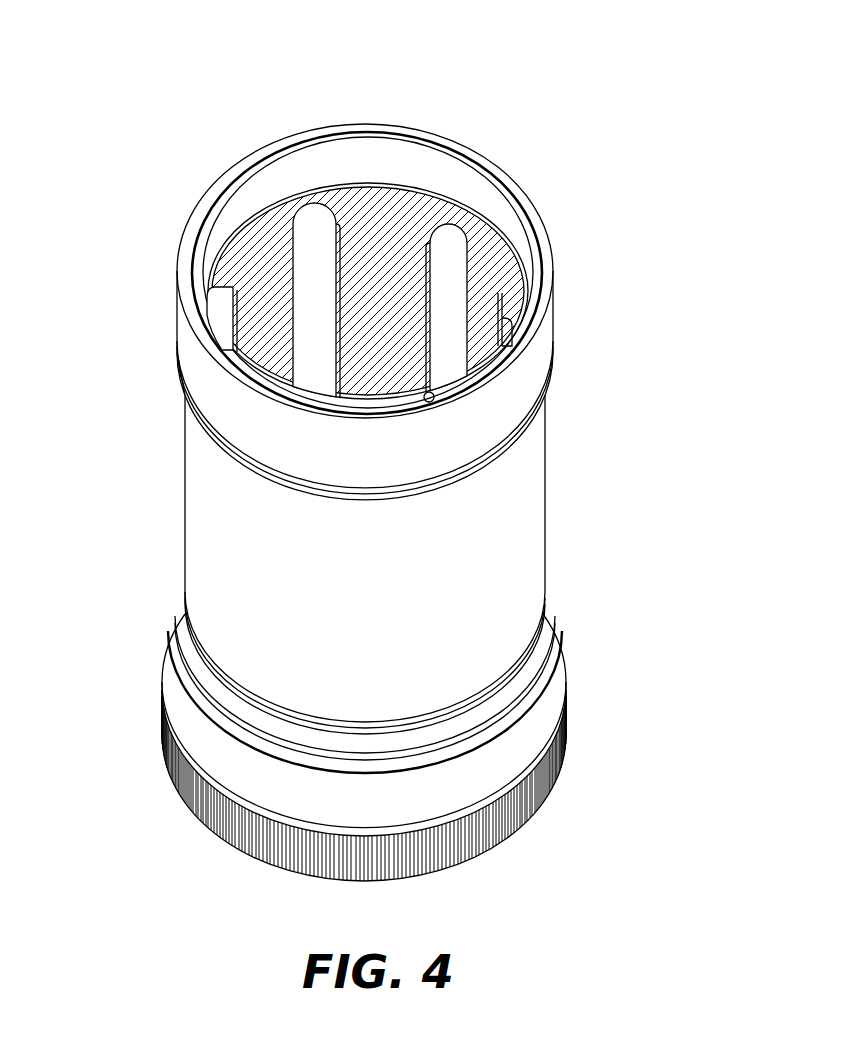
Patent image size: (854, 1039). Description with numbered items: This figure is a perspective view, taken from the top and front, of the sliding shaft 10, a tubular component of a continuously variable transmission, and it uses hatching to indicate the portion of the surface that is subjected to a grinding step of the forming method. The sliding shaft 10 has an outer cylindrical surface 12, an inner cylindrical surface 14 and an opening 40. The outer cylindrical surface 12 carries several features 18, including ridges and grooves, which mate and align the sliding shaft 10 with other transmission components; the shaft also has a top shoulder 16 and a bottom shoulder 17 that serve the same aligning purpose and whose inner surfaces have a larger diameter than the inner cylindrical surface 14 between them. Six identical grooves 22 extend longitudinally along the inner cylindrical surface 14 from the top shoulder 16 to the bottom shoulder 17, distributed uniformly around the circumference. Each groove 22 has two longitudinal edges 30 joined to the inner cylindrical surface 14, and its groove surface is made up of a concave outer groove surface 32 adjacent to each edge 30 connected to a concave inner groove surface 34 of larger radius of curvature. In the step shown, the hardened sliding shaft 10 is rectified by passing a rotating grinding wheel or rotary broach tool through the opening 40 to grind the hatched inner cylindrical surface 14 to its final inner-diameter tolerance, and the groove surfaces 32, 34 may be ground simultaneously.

The sliding shaft 10 is at (496, 60).
The outer cylindrical surface 12 is at (503, 522).
The inner cylindrical surface 14 is at (387, 243).
The top shoulder 16 is at (450, 185).
The bottom shoulder 17 is at (570, 727).
The features 18 is at (183, 382).
The groove 22 is at (445, 325).
The longitudinal edge 30 is at (468, 303).
The outer groove surface 32 is at (290, 202).
The inner groove surface 34 is at (302, 212).
The opening 40 is at (382, 377).